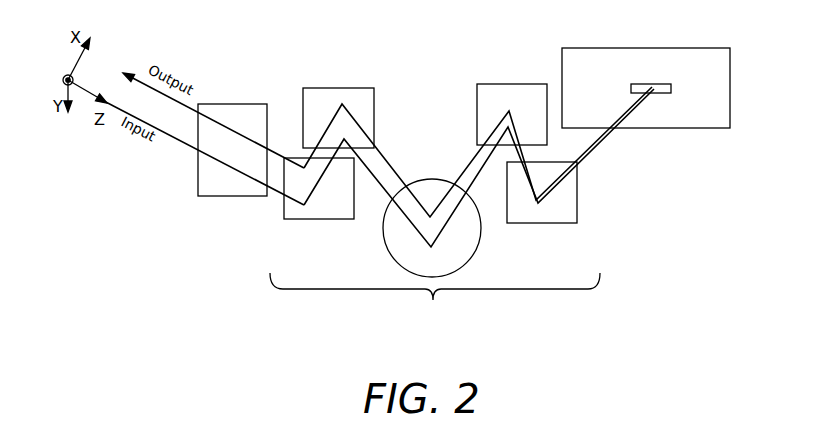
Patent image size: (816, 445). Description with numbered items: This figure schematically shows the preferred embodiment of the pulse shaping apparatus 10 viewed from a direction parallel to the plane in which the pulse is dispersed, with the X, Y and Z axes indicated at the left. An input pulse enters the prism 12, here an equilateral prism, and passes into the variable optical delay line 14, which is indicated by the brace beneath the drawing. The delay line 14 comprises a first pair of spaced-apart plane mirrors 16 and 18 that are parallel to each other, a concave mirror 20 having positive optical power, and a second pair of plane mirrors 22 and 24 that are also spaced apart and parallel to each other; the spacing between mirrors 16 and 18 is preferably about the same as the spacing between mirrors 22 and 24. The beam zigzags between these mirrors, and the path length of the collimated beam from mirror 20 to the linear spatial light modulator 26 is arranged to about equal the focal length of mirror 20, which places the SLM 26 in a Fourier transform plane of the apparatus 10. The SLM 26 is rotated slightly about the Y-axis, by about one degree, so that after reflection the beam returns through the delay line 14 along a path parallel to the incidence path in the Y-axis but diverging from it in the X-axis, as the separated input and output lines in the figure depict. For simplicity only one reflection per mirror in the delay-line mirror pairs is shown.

The pulse shaping apparatus 10 is at (655, 337).
The prism 12 is at (243, 103).
The variable optical delay line 14 is at (435, 301).
The plane mirror 16 is at (327, 218).
The plane mirror 18 is at (353, 92).
The concave mirror 20 is at (468, 247).
The plane mirror 22 is at (488, 87).
The plane mirror 24 is at (568, 220).
The linear spatial light modulator 26 is at (665, 83).